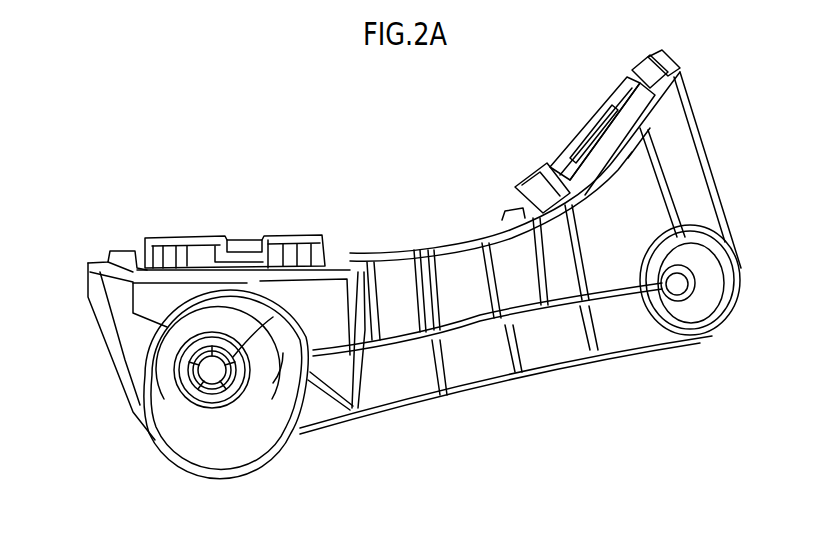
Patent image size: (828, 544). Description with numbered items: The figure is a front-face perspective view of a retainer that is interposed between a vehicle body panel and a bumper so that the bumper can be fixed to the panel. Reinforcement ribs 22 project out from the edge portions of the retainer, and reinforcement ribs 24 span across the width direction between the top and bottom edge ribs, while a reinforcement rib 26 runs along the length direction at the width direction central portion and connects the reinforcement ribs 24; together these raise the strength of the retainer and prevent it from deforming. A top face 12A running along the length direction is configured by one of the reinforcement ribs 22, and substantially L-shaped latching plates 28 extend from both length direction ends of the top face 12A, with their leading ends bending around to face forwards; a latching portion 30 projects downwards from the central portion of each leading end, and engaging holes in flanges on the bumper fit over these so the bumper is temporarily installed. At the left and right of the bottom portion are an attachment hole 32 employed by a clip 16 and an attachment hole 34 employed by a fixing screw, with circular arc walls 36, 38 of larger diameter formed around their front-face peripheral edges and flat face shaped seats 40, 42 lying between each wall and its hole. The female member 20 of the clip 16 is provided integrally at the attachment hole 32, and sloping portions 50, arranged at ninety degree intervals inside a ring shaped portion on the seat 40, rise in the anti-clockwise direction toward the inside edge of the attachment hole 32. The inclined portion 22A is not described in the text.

The top face 12A is at (107, 274).
The clip 16 is at (210, 395).
The female member 20 is at (182, 395).
The reinforcement ribs 22 is at (103, 330).
The inclined portion of frame 22A is at (625, 137).
The reinforcement ribs 24 is at (370, 290).
The reinforcement rib 26 is at (470, 337).
The latching plates 28 is at (287, 250).
The latching portion 30 is at (245, 243).
The attachment hole 32 is at (205, 424).
The attachment hole 34 is at (678, 288).
The circular arc wall 36 is at (287, 375).
The circular arc wall 38 is at (723, 272).
The seat 40 is at (238, 440).
The seat 42 is at (705, 300).
The sloping portions 50 is at (285, 307).